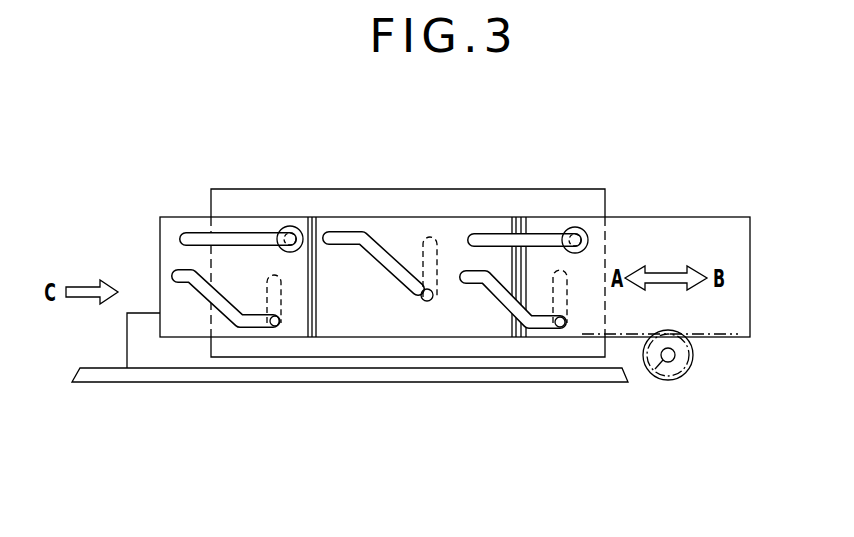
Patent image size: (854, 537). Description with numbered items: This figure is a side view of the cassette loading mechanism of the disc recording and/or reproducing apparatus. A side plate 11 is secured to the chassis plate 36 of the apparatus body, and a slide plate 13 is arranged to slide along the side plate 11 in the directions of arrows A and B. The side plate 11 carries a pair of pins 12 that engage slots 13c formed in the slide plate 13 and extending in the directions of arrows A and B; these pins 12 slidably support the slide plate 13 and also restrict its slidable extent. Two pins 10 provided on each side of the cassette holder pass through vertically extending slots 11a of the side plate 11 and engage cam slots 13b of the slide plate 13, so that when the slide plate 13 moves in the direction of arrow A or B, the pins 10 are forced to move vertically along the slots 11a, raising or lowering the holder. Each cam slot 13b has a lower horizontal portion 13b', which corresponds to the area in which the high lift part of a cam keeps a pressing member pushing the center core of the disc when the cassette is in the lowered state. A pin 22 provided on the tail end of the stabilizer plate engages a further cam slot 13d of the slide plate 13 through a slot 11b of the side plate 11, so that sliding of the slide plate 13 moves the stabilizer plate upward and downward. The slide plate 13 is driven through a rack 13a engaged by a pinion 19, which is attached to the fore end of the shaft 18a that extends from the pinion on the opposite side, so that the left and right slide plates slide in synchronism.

The pin 10 is at (277, 327).
The side plate 11 is at (245, 202).
The slot 11a is at (281, 295).
The slot 11b is at (435, 262).
The pin 12 is at (294, 226).
The slide plate 13 is at (725, 237).
The rack 13a is at (717, 343).
The cam slot 13b is at (361, 353).
The lower horizontal portion 13b' is at (384, 375).
The slot 13c is at (205, 236).
The cam slot 13d is at (378, 253).
The shaft 18a is at (658, 380).
The pinion 19 is at (672, 381).
The pin 22 is at (427, 301).
The chassis plate 36 is at (102, 376).